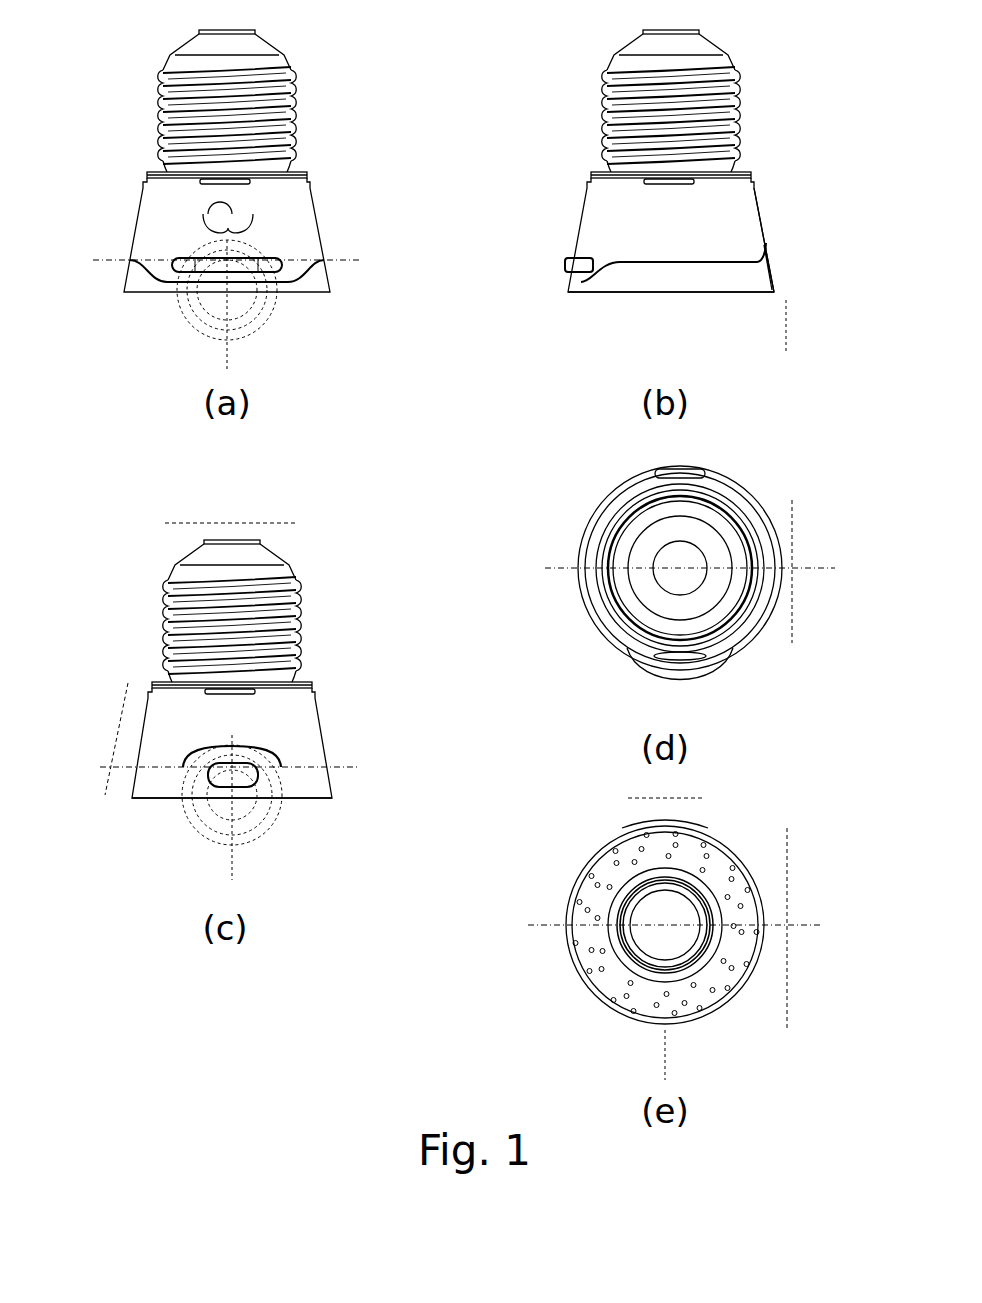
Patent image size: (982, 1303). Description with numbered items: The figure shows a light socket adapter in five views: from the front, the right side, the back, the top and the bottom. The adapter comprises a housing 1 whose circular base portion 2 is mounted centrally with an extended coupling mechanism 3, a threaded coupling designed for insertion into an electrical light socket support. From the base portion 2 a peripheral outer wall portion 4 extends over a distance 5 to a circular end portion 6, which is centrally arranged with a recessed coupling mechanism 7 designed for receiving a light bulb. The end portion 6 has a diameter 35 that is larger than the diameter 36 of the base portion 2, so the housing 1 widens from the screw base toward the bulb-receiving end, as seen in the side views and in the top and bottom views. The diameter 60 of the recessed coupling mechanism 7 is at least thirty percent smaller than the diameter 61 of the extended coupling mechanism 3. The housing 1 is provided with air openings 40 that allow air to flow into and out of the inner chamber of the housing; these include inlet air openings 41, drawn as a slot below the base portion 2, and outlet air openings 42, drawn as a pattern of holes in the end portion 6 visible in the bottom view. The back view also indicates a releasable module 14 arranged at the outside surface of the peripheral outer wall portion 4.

The housing 1 is at (617, 238).
The base portion 2 is at (592, 176).
The extended coupling mechanism 3 is at (712, 100).
The peripheral outer wall portion 4 is at (758, 215).
The distance 5 is at (106, 739).
The end portion 6 is at (600, 297).
The recessed coupling mechanism 7 is at (657, 925).
The releasable module 14 is at (252, 822).
The diameter of the end portion 35 is at (810, 928).
The diameter of the base portion 36 is at (817, 571).
The air openings 40 is at (633, 855).
The inlet air openings 41 is at (252, 690).
The outlet air openings 42 is at (610, 977).
The diameter of the recessed coupling mechanism 60 is at (688, 799).
The diameter of the extended coupling mechanism 61 is at (257, 524).